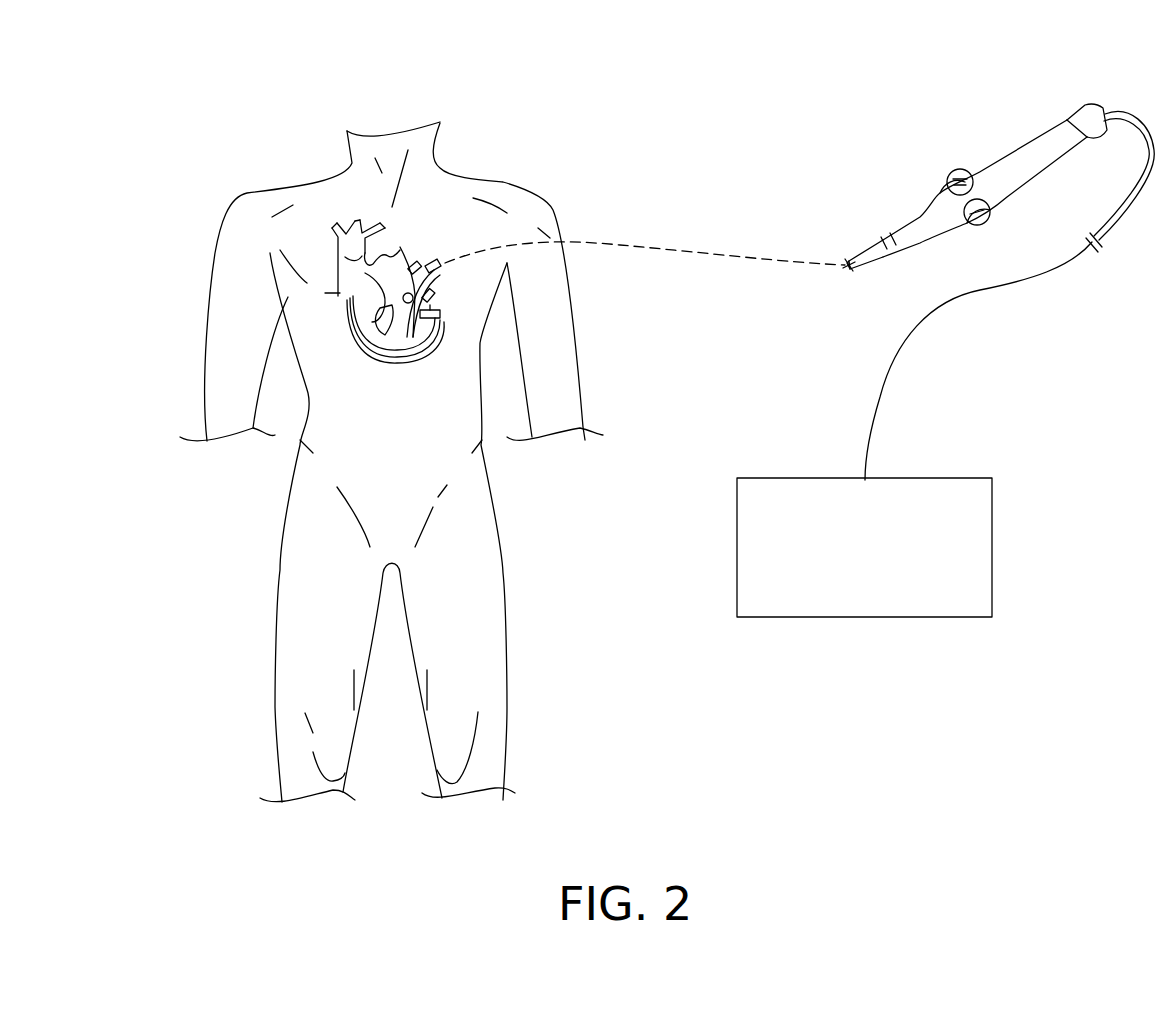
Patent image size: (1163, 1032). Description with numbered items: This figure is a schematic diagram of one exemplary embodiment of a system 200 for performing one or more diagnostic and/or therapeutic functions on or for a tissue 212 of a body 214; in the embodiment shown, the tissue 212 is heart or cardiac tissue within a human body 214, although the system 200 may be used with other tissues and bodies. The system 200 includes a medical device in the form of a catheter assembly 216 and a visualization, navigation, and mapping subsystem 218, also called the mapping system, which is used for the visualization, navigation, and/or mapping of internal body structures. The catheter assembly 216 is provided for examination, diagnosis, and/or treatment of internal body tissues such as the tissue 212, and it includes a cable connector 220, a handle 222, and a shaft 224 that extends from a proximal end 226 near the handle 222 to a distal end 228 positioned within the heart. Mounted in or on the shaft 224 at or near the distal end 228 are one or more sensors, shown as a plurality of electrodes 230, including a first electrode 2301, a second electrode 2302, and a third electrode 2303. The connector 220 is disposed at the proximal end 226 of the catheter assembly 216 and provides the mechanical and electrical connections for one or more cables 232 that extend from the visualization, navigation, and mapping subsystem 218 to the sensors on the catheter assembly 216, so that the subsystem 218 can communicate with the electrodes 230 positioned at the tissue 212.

The system 200 is at (667, 110).
The tissue 212 is at (437, 330).
The body 214 is at (285, 578).
The catheter assembly 216 is at (967, 153).
The visualization, navigation, and mapping subsystem 218 is at (993, 503).
The cable connector 220 is at (1068, 120).
The handle 222 is at (1012, 147).
The shaft 224 is at (846, 262).
The proximal end 226 is at (873, 262).
The distal end 228 is at (392, 268).
The electrodes 230 is at (427, 319).
The first electrode 2301 is at (403, 363).
The second electrode 2302 is at (405, 278).
The third electrode 2303 is at (433, 280).
The cables 232 is at (1135, 120).